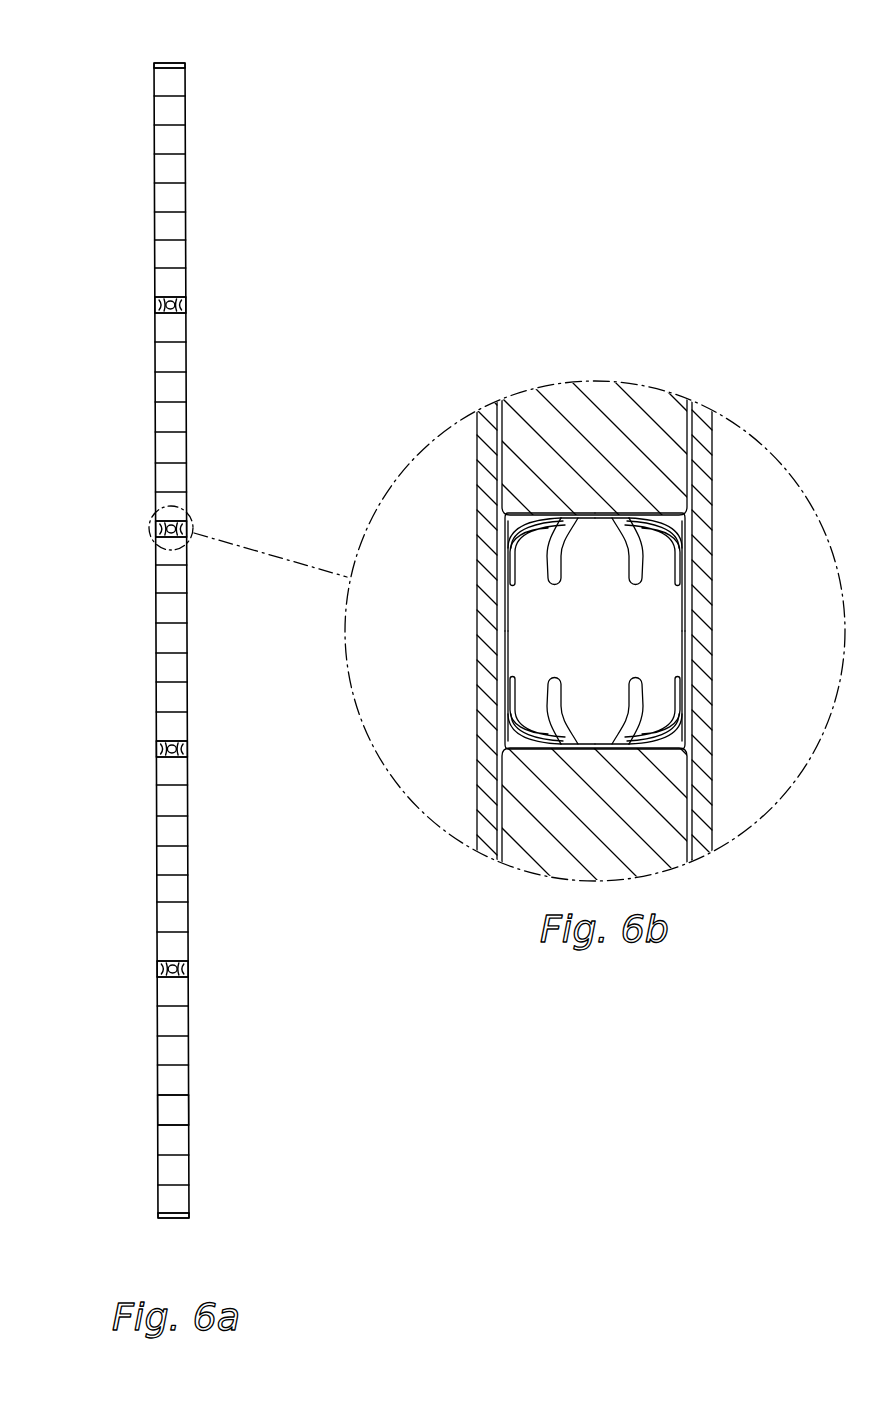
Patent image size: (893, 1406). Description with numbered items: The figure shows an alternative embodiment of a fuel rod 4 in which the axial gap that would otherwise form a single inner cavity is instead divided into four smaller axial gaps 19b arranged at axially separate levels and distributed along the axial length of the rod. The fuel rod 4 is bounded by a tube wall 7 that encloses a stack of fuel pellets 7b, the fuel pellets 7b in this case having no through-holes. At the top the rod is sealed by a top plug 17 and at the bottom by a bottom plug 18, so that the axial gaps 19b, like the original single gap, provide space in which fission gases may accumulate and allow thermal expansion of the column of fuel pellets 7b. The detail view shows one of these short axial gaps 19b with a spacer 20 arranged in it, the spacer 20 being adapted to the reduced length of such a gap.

In FIG. 6a, the fuel rod 4 is at (128, 429).
In FIG. 6b, the tube wall 7 is at (489, 498).
In FIG. 6a, the fuel pellets 7b is at (172, 1110).
In FIG. 6b, the fuel pellets 7b is at (527, 780).
In FIG. 6a, the top plug 17 is at (172, 63).
In FIG. 6a, the bottom plug 18 is at (175, 1219).
In FIG. 6a, the axial gaps 19b is at (156, 305).
In FIG. 6b, the axial gaps 19b is at (553, 549).
In FIG. 6b, the spacer 20 is at (550, 635).